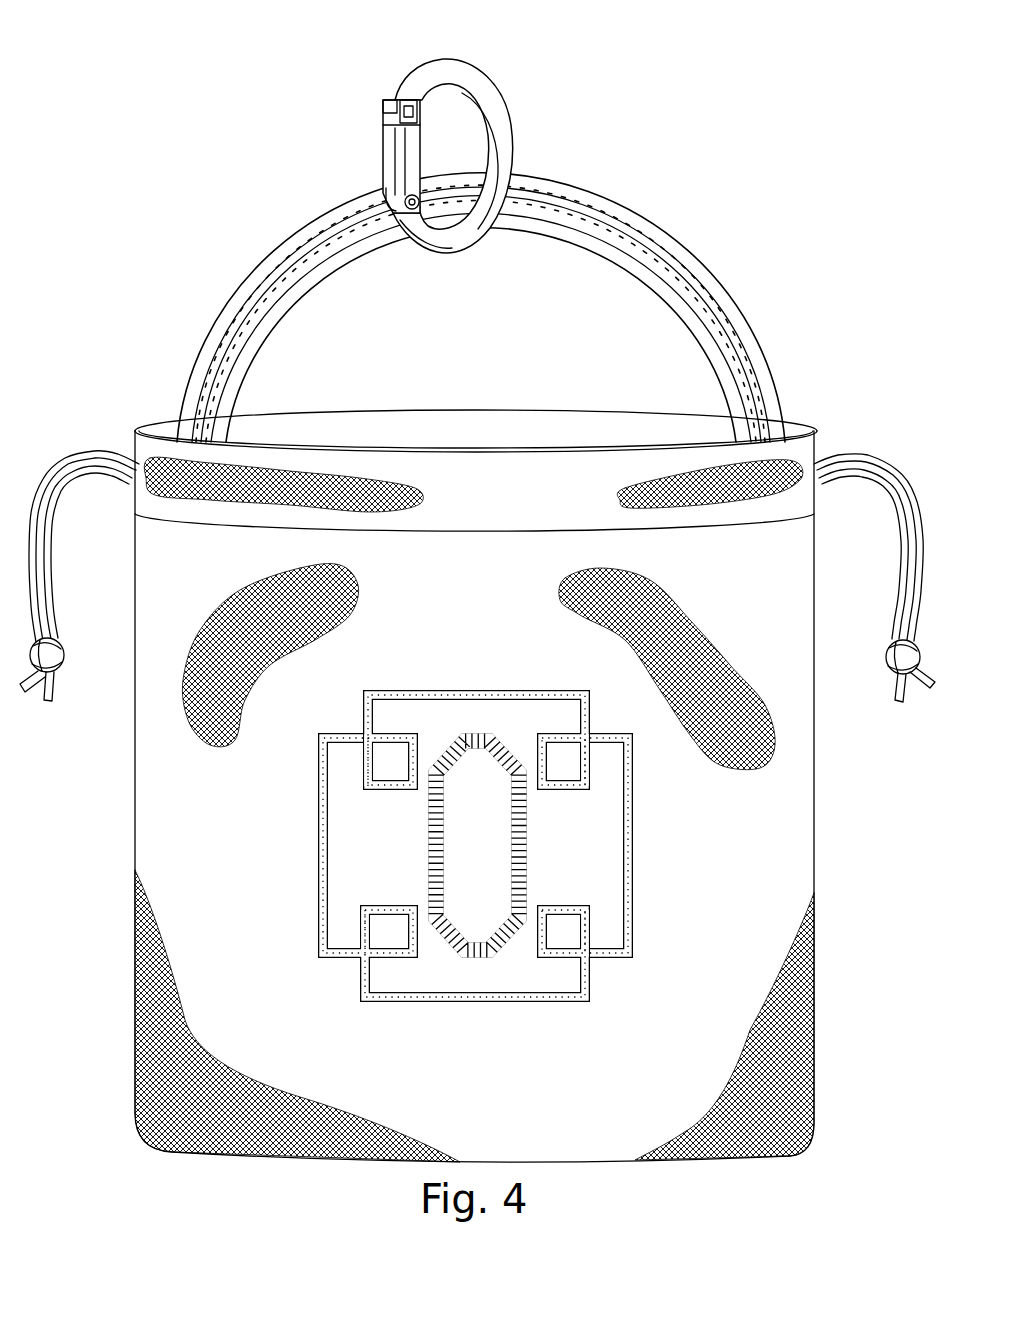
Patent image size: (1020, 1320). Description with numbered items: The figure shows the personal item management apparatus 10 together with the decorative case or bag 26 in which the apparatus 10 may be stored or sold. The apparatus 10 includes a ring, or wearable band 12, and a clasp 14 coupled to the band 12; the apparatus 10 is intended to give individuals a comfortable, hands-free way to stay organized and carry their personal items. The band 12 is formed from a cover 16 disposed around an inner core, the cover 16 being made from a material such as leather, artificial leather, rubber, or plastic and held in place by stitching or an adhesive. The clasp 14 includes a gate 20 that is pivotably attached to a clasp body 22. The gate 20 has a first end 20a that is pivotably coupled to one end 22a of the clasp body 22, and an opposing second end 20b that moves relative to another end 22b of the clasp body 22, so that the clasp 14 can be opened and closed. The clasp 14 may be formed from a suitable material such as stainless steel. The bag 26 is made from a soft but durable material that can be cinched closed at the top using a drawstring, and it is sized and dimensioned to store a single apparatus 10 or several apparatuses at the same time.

The personal item management apparatus 10 is at (257, 104).
The wearable band 12 is at (617, 213).
The clasp 14 is at (503, 112).
The cover 16 is at (660, 250).
The gate 20 is at (383, 167).
The first end 20a is at (383, 207).
The second end 20b is at (383, 110).
The clasp body 22 is at (465, 63).
The one end 22a is at (397, 237).
The another end 22b is at (393, 97).
The bag 26 is at (130, 805).